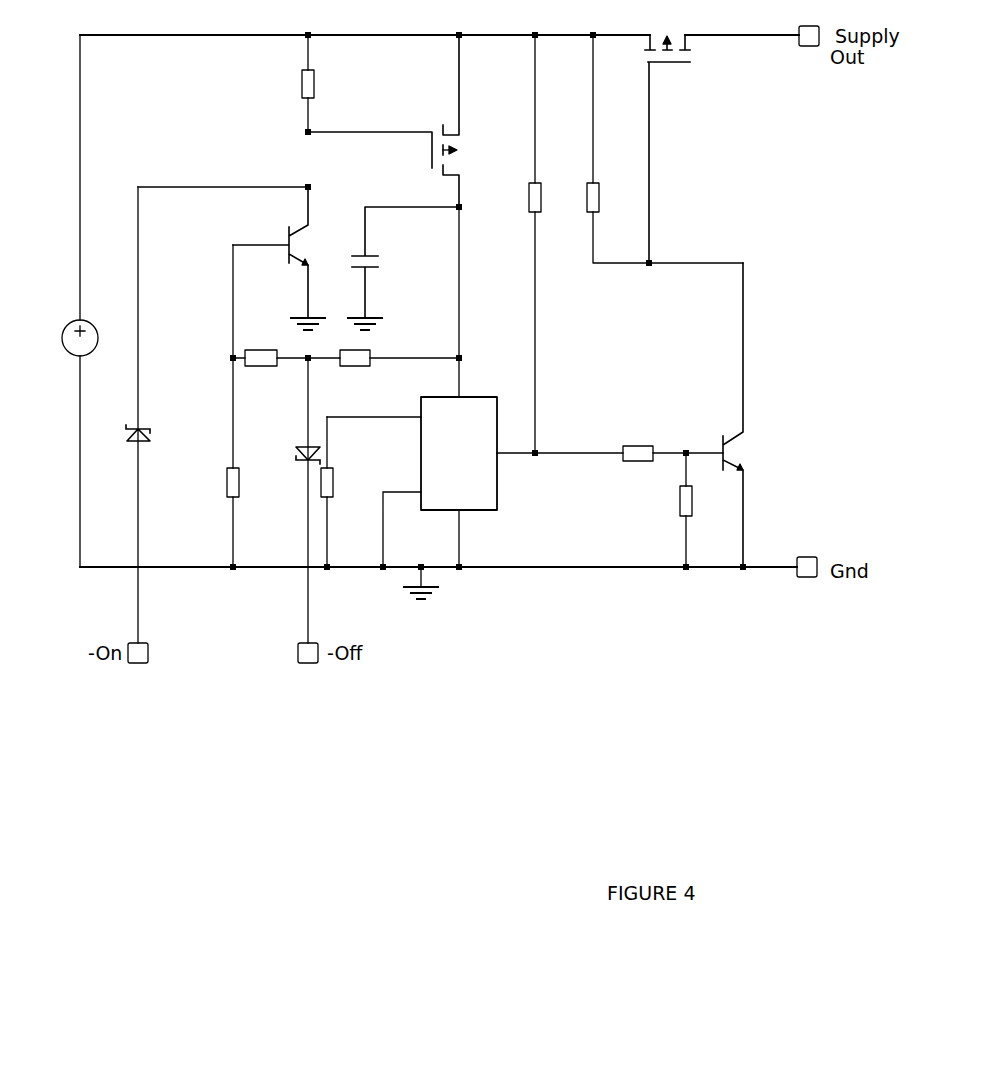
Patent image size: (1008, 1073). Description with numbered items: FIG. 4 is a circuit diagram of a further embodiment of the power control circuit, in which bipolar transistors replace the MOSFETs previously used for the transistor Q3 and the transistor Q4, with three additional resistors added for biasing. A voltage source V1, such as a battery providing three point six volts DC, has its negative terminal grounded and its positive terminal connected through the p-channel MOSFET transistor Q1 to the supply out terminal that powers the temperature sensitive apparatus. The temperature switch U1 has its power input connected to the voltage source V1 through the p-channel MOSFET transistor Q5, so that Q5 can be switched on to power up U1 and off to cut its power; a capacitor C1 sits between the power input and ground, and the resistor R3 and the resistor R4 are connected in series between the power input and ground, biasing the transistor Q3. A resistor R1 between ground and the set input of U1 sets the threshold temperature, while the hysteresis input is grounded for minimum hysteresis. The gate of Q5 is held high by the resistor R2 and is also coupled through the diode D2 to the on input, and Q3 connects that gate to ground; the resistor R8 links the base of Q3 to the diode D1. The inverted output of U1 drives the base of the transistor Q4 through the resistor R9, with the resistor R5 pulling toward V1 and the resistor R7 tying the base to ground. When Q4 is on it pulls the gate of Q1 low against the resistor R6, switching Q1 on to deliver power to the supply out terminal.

The voltage source V1 is at (84, 324).
The resistor R2 is at (325, 83).
The transistor Q3 is at (279, 258).
The p-channel MOSFET transistor Q5 is at (400, 121).
The capacitor C1 is at (403, 268).
The resistor R5 is at (519, 244).
The resistor R6 is at (665, 149).
The p-channel MOSFET transistor Q1 is at (667, 149).
The resistor R8 is at (270, 370).
The resistor R3 is at (383, 370).
The resistor R4 is at (216, 462).
The diode D1 is at (293, 454).
The diode D2 is at (154, 436).
The resistor R1 is at (340, 492).
The temperature switch U1 is at (475, 478).
The resistor R9 is at (673, 442).
The resistor R7 is at (671, 510).
The transistor Q4 is at (748, 415).